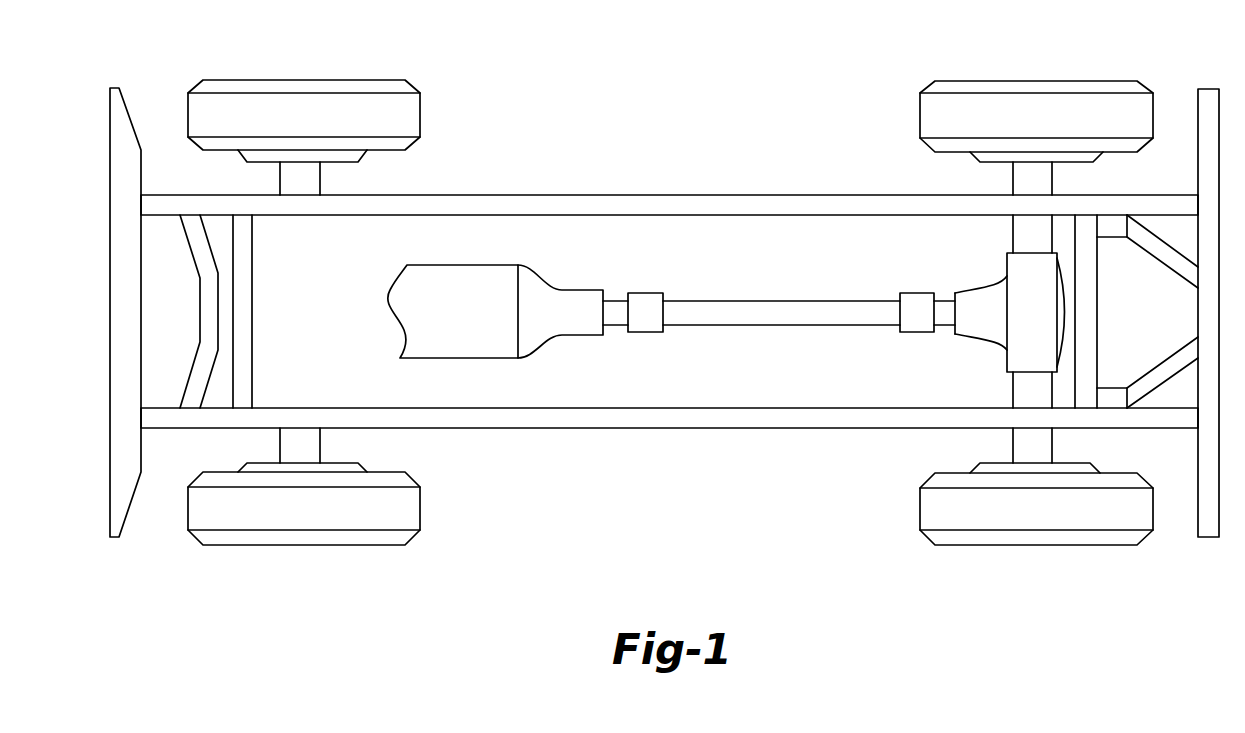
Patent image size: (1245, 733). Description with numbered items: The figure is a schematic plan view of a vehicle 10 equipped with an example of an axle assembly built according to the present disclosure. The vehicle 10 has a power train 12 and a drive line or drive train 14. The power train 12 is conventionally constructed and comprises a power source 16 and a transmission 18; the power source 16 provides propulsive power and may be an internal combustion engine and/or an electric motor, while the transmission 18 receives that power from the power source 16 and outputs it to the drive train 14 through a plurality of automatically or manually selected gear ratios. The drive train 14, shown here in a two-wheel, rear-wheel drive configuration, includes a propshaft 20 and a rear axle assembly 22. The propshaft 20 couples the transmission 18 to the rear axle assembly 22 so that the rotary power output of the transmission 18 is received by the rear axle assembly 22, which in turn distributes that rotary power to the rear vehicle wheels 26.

The vehicle 10 is at (549, 90).
The power train 12 is at (502, 358).
The drive train 14 is at (779, 276).
The power source 16 is at (466, 327).
The transmission 18 is at (533, 293).
The propshaft 20 is at (732, 326).
The rear axle assembly 22 is at (986, 356).
The rear vehicle wheels 26 is at (918, 117).